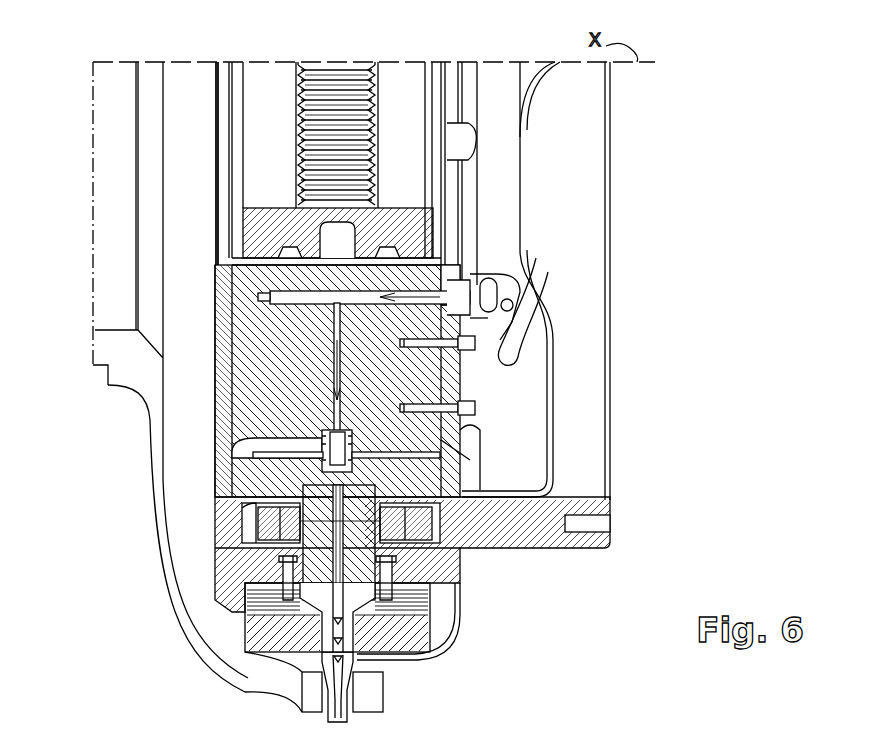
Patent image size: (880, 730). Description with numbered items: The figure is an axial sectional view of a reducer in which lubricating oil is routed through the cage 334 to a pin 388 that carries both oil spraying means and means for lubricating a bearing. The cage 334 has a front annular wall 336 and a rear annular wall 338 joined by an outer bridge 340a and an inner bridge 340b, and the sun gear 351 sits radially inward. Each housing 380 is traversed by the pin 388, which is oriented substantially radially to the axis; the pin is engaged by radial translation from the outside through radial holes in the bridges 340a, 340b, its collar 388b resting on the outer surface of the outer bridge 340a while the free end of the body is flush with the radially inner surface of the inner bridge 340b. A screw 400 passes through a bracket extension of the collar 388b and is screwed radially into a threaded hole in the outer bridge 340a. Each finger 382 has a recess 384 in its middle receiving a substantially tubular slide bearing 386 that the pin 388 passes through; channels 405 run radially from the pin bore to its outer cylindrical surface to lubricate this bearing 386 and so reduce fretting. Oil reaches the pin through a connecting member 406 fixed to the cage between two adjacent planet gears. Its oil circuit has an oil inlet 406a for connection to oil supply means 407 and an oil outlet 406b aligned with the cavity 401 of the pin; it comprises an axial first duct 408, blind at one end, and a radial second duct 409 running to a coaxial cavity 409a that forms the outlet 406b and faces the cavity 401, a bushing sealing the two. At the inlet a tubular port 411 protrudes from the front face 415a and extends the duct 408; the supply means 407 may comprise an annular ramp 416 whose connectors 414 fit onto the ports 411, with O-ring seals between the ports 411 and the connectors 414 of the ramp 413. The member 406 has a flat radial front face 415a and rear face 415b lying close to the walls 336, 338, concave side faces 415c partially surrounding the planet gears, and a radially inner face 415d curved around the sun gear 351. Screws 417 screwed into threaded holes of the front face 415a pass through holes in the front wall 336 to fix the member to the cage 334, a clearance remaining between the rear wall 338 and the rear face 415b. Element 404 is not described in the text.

The cage 334 is at (206, 477).
The front annular wall 336 is at (455, 565).
The rear annular wall 338 is at (215, 276).
The outer bridge 340a is at (440, 628).
The inner bridge 340b is at (460, 430).
The sun gear 351 is at (355, 72).
The housing 380 is at (232, 545).
The finger 382 is at (230, 535).
The recess 384 is at (478, 535).
The slide bearing 386 is at (258, 590).
The pin 388 is at (450, 582).
The collar 388b is at (305, 600).
The screw 400 is at (300, 615).
The cavity 401 is at (520, 530).
The nozzle block 404 is at (385, 640).
The channel 405 is at (325, 478).
The connecting member 406 is at (226, 296).
The oil inlet 406a is at (478, 322).
The oil outlet 406b is at (600, 520).
The oil supply means 407 is at (526, 197).
The first duct 408 is at (312, 250).
The second duct 409 is at (333, 383).
The cavity 409a is at (313, 440).
The tubular port 411 is at (505, 290).
The ramp 413 is at (503, 167).
The connector 414 is at (467, 137).
The front face 415a is at (455, 385).
The rear face 415b is at (215, 337).
The concave curved side face 415c is at (338, 250).
The radially inner face 415d is at (470, 455).
The annular ramp 416 is at (341, 395).
The screw 417 is at (470, 340).